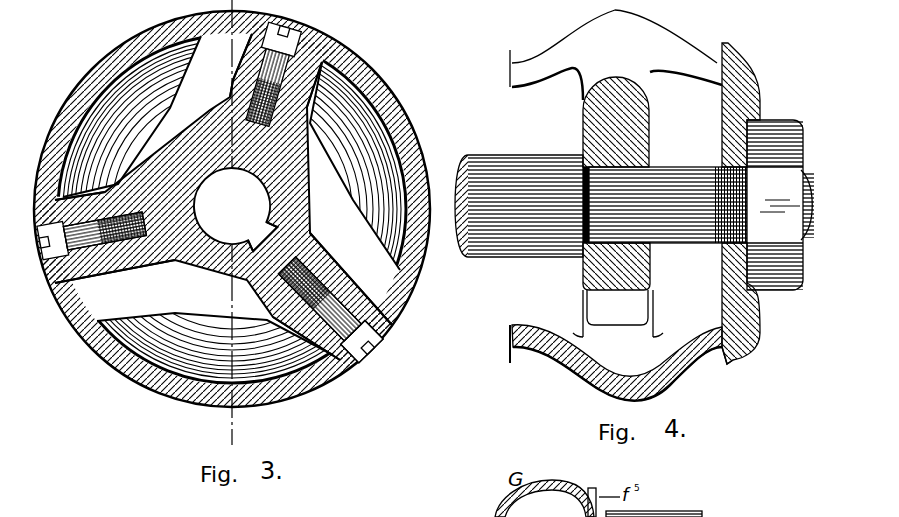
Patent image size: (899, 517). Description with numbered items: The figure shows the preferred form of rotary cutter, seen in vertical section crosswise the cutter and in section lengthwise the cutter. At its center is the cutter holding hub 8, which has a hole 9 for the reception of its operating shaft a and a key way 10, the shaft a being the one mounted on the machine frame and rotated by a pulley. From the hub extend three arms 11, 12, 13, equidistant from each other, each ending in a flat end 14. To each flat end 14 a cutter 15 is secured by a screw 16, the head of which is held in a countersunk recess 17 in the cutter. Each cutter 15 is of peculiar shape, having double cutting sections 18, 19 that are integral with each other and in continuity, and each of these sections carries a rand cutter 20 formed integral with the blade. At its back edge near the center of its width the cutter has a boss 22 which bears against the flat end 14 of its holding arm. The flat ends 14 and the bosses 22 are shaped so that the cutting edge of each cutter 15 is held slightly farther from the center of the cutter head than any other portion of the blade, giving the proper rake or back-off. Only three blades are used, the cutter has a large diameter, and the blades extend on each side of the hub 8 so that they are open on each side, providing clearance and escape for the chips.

In FIG. 3, the cutter holding hub 8 is at (285, 182).
In FIG. 4, the cutter holding hub 8 is at (638, 145).
In FIG. 3, the hole 9 is at (197, 193).
In FIG. 3, the key way 10 is at (265, 243).
In FIG. 3, the arm 11 is at (143, 265).
In FIG. 3, the arm 12 is at (232, 97).
In FIG. 3, the arm 13 is at (320, 253).
In FIG. 3, the flat end 14 is at (333, 280).
In FIG. 3, the cutter 15 is at (418, 97).
In FIG. 3, the screw 16 is at (302, 41).
In FIG. 3, the countersunk recess 17 is at (353, 363).
In FIG. 4, the cutting section 18 is at (522, 387).
In FIG. 4, the cutting section 19 is at (712, 385).
In FIG. 4, the rand cutter 20 is at (508, 358).
In FIG. 3, the boss 22 is at (117, 175).
In FIG. 4, the boss 22 is at (733, 357).
In FIG. 4, the shaft a is at (470, 193).